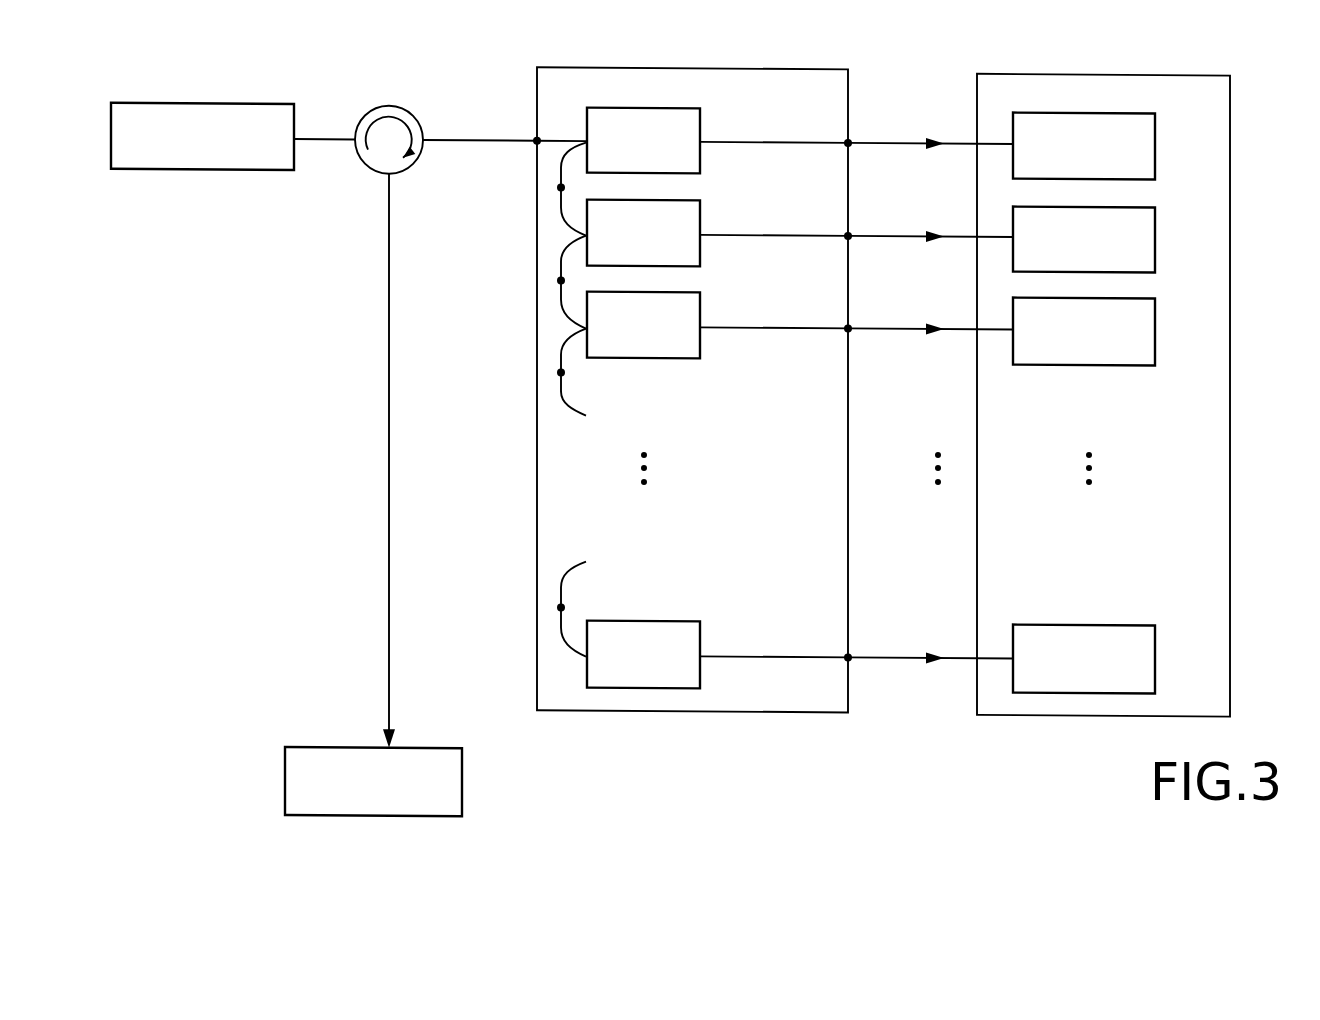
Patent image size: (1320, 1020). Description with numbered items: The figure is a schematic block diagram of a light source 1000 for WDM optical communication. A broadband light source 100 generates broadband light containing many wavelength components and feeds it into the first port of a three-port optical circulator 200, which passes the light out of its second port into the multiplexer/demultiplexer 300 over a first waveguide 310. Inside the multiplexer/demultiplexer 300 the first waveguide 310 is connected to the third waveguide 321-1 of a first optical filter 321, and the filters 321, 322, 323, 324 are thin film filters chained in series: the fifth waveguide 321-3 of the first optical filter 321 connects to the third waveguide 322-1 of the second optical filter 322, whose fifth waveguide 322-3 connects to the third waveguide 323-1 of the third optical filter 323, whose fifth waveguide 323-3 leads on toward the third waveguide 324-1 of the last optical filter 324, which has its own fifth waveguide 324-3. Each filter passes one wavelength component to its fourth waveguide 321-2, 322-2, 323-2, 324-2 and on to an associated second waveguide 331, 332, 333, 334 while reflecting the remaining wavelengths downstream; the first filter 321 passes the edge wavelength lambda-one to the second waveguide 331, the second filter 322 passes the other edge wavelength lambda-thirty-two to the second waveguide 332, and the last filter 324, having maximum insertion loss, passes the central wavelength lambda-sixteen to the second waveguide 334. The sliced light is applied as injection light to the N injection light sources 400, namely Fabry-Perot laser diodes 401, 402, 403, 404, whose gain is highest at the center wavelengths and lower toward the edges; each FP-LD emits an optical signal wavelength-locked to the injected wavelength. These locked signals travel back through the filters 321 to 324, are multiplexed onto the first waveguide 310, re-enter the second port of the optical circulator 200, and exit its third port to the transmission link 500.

The light source for WDM optical communication 1000 is at (869, 30).
The broadband light source 100 is at (204, 106).
The optical circulator 200 is at (390, 107).
The multiplexer/demultiplexer 300 is at (701, 68).
The first waveguide 310 is at (497, 140).
The first optical filter 321 is at (711, 120).
The second optical filter 322 is at (711, 212).
The third optical filter 323 is at (711, 304).
The N-th optical filter 324 is at (711, 633).
The third waveguide of first optical filter 321-1 is at (561, 162).
The fourth waveguide of first optical filter 321-2 is at (802, 141).
The fifth waveguide of first optical filter 321-3 is at (561, 204).
The third waveguide of second optical filter 322-1 is at (561, 252).
The fourth waveguide of second optical filter 322-2 is at (802, 234).
The fifth waveguide of second optical filter 322-3 is at (561, 296).
The third waveguide of third optical filter 323-1 is at (561, 346).
The fourth waveguide of third optical filter 323-2 is at (802, 326).
The fifth waveguide of third optical filter 323-3 is at (561, 387).
The third waveguide of N-th optical filter 324-1 is at (561, 584).
The fourth waveguide of N-th optical filter 324-2 is at (802, 655).
The fifth waveguide of N-th optical filter 324-3 is at (561, 626).
The first second-waveguide 331 is at (884, 141).
The second second-waveguide 332 is at (884, 234).
The third second-waveguide 333 is at (884, 326).
The N-th second-waveguide 334 is at (884, 655).
The injection light sources 400 is at (1103, 71).
The first FP-LD 401 is at (1157, 144).
The second FP-LD 402 is at (1157, 236).
The third FP-LD 403 is at (1157, 328).
The N-th FP-LD 404 is at (1157, 656).
The transmission link 500 is at (463, 784).